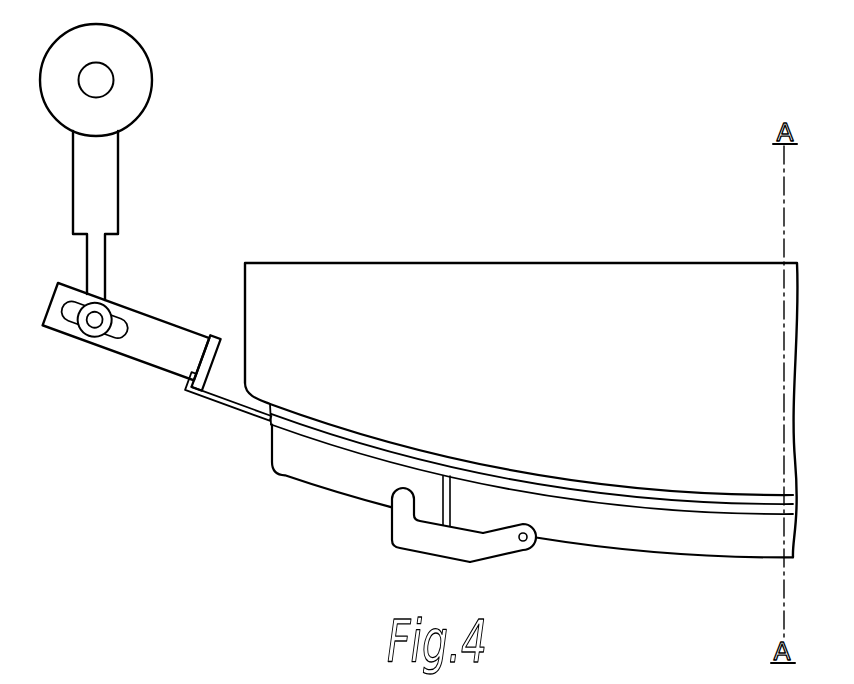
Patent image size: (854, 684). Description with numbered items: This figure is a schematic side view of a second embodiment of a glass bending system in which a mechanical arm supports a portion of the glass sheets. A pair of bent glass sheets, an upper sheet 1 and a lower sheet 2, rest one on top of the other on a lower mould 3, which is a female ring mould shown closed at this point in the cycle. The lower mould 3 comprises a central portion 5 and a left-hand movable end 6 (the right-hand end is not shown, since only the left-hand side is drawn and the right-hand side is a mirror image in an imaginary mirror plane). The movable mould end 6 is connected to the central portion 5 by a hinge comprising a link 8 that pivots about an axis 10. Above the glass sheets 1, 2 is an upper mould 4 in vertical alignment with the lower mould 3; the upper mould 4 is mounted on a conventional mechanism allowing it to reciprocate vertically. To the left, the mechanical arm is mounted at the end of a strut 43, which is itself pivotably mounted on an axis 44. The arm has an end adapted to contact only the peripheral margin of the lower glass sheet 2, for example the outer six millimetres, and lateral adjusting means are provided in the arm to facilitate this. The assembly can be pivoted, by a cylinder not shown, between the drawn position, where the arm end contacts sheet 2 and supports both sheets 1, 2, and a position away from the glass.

The upper sheet 1 is at (789, 501).
The lower sheet 2 is at (789, 508).
The lower mould 3 is at (490, 567).
The upper mould 4 is at (525, 248).
The central portion 5 is at (675, 535).
The left-hand movable end 6 is at (322, 470).
The link 8 is at (435, 546).
The axis 10 is at (527, 541).
The strut 43 is at (108, 175).
The axis 44 is at (105, 78).